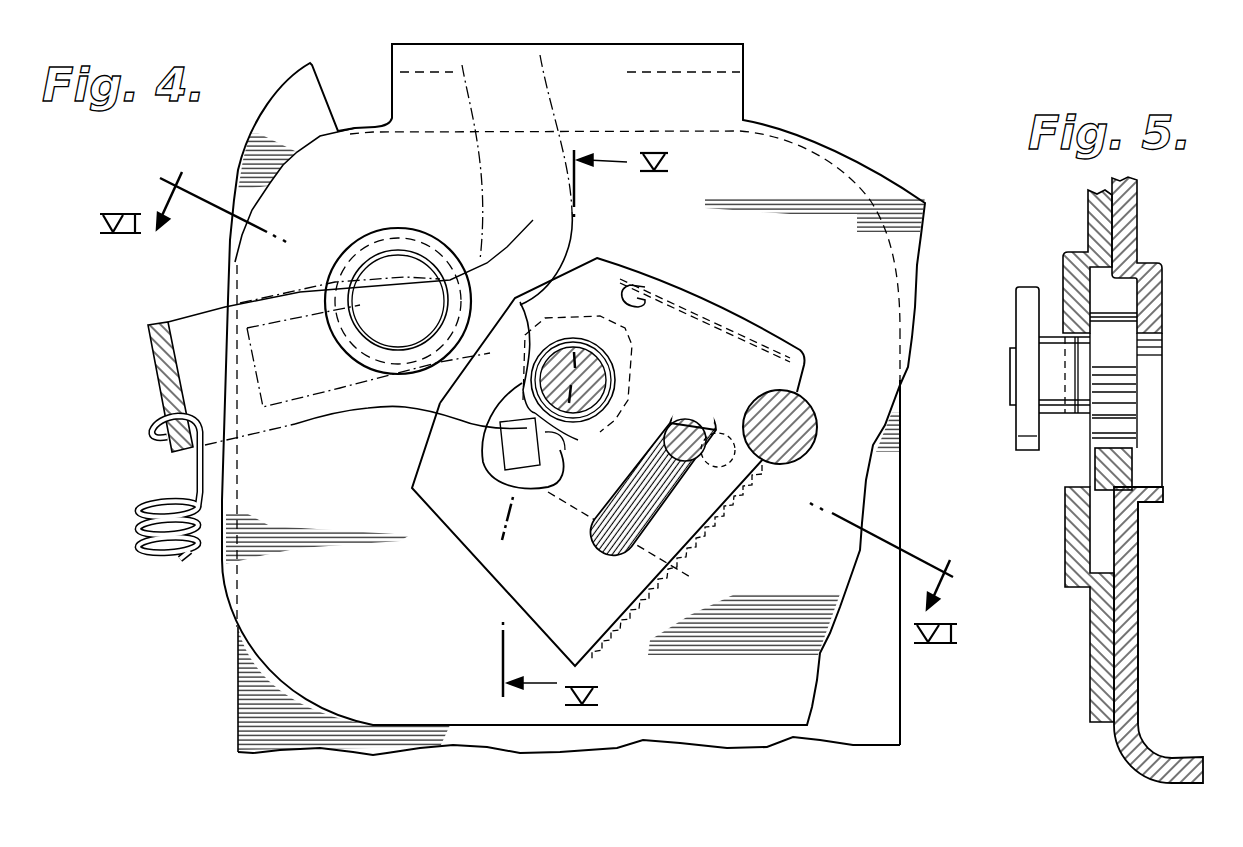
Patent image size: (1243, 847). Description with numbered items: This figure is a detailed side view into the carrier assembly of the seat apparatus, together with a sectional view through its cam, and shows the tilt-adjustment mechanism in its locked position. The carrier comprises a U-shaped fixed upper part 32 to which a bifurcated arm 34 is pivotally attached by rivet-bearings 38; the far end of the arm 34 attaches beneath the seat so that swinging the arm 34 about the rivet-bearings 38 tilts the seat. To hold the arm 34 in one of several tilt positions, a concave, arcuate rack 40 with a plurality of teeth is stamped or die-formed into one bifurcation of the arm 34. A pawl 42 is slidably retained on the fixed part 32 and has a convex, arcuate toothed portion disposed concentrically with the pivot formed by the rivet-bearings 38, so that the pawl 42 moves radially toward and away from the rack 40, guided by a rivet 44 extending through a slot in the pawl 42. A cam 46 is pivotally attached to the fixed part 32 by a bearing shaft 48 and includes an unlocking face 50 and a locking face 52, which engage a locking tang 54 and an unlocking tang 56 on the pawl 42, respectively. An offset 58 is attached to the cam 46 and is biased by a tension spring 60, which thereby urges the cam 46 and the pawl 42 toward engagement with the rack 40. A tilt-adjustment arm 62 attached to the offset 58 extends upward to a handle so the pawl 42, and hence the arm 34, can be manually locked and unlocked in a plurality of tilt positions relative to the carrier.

In FIG. 4, the fixed upper part 32 is at (521, 443).
In FIG. 5, the fixed upper part 32 is at (1137, 685).
In FIG. 4, the bifurcated arm 34 is at (812, 185).
In FIG. 5, the bifurcated arm 34 is at (1062, 604).
In FIG. 4, the rivet-bearings 38 is at (390, 258).
In FIG. 4, the arcuate rack 40 is at (805, 432).
In FIG. 4, the pawl 42 is at (790, 348).
In FIG. 5, the pawl 42 is at (1113, 470).
In FIG. 4, the rivet 44 is at (690, 445).
In FIG. 4, the cam 46 is at (578, 430).
In FIG. 5, the cam 46 is at (1127, 400).
In FIG. 4, the bearing shaft 48 is at (560, 355).
In FIG. 5, the bearing shaft 48 is at (1011, 383).
In FIG. 4, the unlocking face 50 is at (480, 440).
In FIG. 4, the locking face 52 is at (606, 310).
In FIG. 5, the locking face 52 is at (1142, 307).
In FIG. 4, the locking tang 54 is at (552, 445).
In FIG. 5, the locking tang 54 is at (1087, 440).
In FIG. 4, the unlocking tang 56 is at (643, 281).
In FIG. 4, the offset 58 is at (148, 327).
In FIG. 5, the offset 58 is at (1027, 321).
In FIG. 4, the tension spring 60 is at (140, 540).
In FIG. 4, the tilt-adjustment arm 62 is at (530, 112).